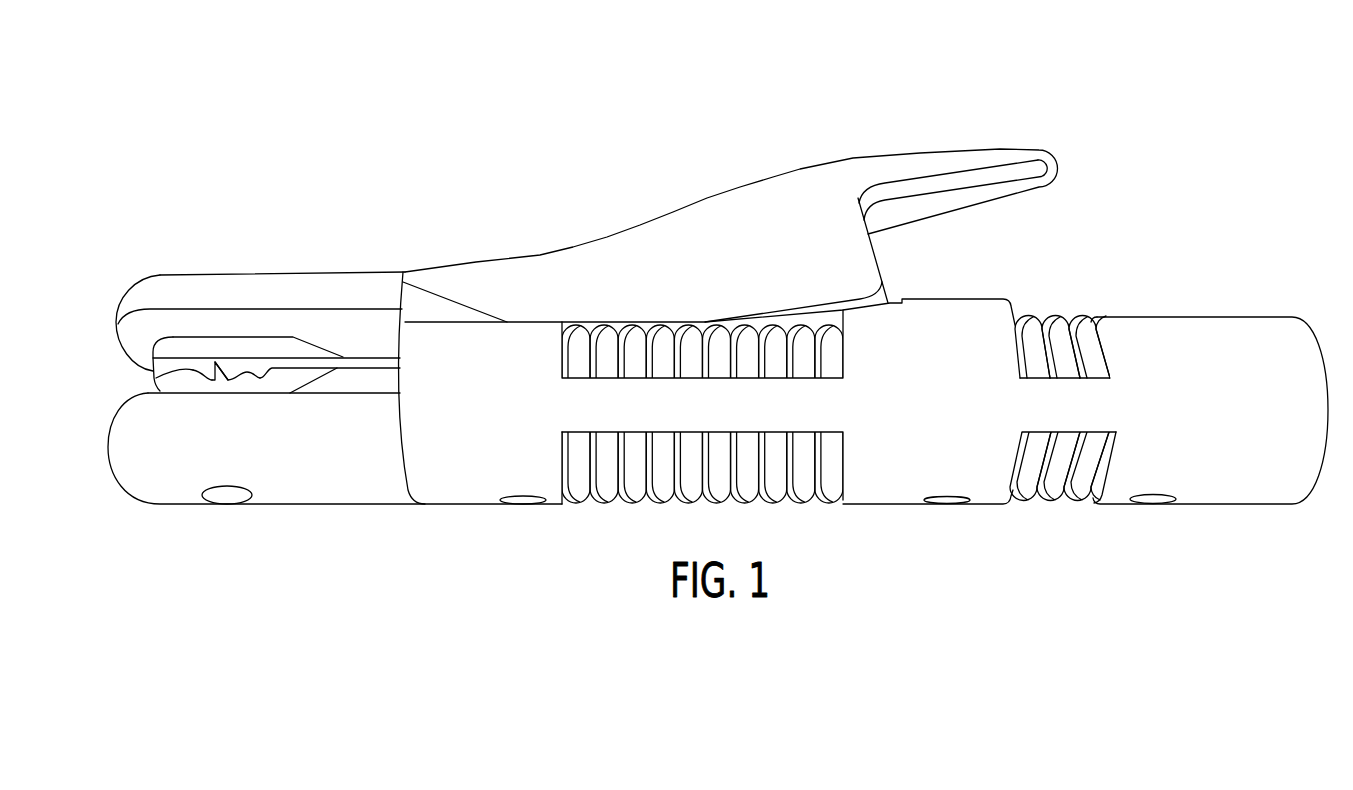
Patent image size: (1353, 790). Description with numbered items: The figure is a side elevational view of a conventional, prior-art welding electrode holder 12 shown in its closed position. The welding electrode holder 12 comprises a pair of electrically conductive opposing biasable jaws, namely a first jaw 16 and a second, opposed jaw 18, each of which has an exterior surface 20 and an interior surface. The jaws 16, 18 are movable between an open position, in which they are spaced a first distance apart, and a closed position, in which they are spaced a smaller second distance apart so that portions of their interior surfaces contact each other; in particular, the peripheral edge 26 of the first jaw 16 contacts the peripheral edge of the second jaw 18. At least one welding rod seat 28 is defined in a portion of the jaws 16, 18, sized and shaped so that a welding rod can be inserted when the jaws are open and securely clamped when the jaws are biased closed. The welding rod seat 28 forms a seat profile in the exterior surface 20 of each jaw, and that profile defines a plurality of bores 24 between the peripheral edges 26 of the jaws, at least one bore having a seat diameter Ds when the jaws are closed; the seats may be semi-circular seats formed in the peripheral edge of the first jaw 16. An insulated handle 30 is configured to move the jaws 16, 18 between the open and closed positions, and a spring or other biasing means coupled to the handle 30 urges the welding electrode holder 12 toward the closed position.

The welding electrode holder 12 is at (590, 97).
The insulated handle 30 is at (897, 165).
The first jaw 16 is at (178, 347).
The second jaw 18 is at (288, 382).
The exterior surface 20 is at (177, 384).
The bores 24 is at (258, 373).
The peripheral edge 26 is at (194, 378).
The welding rod seat 28 is at (261, 372).
The seat diameter Ds is at (228, 381).